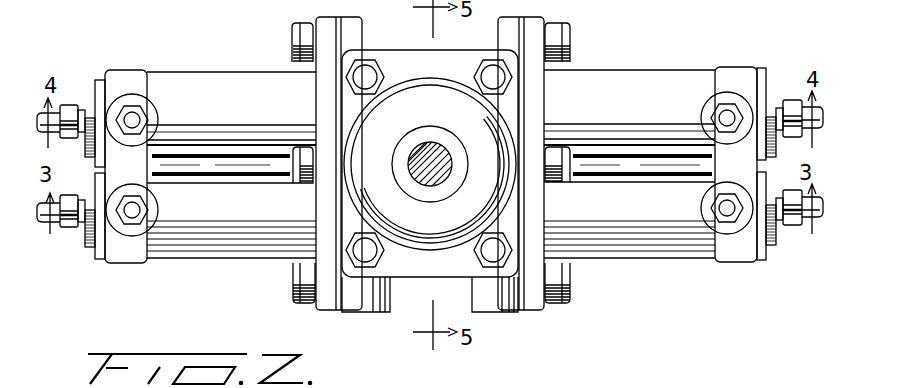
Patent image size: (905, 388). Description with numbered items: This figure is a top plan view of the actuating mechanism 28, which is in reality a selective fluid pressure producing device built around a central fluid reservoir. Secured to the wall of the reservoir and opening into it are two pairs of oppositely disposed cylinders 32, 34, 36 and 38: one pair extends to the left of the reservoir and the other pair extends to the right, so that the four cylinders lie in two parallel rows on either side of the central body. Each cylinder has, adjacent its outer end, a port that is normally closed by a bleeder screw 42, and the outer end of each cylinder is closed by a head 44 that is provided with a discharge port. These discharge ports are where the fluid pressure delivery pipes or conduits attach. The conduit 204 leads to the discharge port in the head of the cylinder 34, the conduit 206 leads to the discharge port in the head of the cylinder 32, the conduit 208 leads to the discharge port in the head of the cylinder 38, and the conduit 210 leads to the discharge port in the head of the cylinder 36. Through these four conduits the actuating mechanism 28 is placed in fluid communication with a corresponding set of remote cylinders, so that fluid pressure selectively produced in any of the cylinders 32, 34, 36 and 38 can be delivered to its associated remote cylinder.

The actuating mechanism 28 is at (375, 324).
The cylinder 32 is at (218, 259).
The cylinder 34 is at (655, 259).
The cylinder 36 is at (195, 82).
The cylinder 38 is at (640, 82).
The bleeder screw 42 is at (140, 108).
The head 44 is at (100, 80).
The fluid pressure delivery pipe or conduit 204 is at (815, 221).
The fluid pressure delivery pipe or conduit 206 is at (50, 223).
The fluid pressure delivery pipe or conduit 208 is at (807, 112).
The fluid pressure delivery pipe or conduit 210 is at (53, 115).